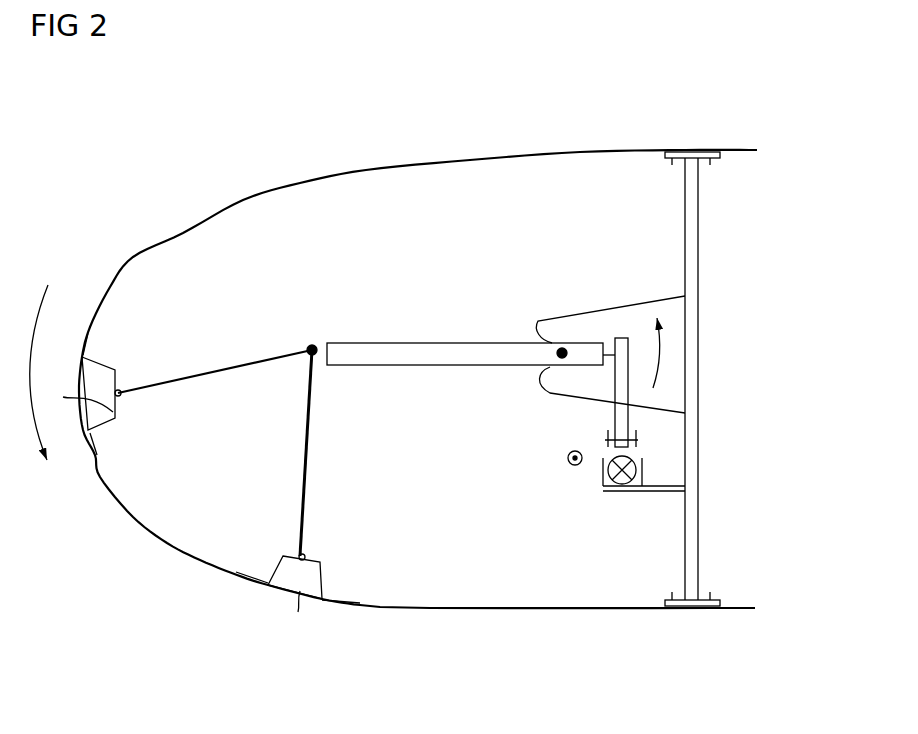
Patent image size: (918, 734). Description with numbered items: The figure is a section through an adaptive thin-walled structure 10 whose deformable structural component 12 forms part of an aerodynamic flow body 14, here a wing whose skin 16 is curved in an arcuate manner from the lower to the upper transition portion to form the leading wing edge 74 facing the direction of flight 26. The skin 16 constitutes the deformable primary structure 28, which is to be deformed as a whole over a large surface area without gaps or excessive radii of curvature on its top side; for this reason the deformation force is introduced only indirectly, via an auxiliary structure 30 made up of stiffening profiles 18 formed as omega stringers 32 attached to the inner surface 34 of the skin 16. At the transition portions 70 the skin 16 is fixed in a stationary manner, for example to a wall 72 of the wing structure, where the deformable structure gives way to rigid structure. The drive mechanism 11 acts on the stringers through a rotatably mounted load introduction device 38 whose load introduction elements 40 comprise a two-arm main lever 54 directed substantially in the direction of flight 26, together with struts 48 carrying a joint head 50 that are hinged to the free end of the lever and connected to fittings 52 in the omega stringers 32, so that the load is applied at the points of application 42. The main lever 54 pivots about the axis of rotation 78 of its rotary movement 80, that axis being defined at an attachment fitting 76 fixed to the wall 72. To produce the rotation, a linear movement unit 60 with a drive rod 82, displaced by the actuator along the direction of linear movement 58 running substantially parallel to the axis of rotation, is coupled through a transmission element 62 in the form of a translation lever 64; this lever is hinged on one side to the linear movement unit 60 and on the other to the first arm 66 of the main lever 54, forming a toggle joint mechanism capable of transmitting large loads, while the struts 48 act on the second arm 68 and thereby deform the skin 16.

The adaptive thin-walled structure 10 is at (66, 175).
The drive mechanism 11 is at (660, 455).
The deformable structural component 12 is at (245, 200).
The aerodynamic flow body 14 is at (738, 135).
The skin 16 is at (470, 160).
The stiffening profiles 18 is at (108, 364).
The flight direction 26 is at (148, 122).
The deformable primary structure 28 is at (366, 170).
The auxiliary structure 30 is at (117, 343).
The omega stringers 32 is at (100, 431).
The inner surface 34 is at (183, 233).
The load introduction device 38 is at (380, 343).
The load introduction elements 40 is at (312, 345).
The points of application 42 is at (125, 393).
The struts 48 is at (226, 371).
The joint head 50 is at (123, 400).
The fittings 52 is at (176, 514).
The main lever 54 is at (425, 352).
The direction of linear movement 58 is at (565, 459).
The linear movement unit 60 is at (612, 488).
The transmission element 62 is at (632, 415).
The translation lever 64 is at (615, 412).
The first arm 66 is at (592, 352).
The second arm 68 is at (408, 358).
The transition portions 70 is at (693, 148).
The wall 72 is at (698, 212).
The leading wing edge 74 is at (60, 313).
The attachment fitting 76 is at (663, 310).
The axis of rotation 78 is at (562, 348).
The rotary movement 80 is at (507, 405).
The drive rod 82 is at (633, 494).